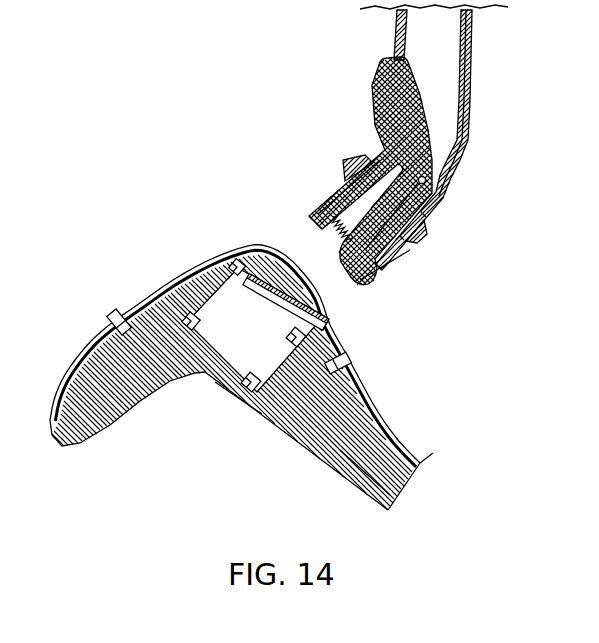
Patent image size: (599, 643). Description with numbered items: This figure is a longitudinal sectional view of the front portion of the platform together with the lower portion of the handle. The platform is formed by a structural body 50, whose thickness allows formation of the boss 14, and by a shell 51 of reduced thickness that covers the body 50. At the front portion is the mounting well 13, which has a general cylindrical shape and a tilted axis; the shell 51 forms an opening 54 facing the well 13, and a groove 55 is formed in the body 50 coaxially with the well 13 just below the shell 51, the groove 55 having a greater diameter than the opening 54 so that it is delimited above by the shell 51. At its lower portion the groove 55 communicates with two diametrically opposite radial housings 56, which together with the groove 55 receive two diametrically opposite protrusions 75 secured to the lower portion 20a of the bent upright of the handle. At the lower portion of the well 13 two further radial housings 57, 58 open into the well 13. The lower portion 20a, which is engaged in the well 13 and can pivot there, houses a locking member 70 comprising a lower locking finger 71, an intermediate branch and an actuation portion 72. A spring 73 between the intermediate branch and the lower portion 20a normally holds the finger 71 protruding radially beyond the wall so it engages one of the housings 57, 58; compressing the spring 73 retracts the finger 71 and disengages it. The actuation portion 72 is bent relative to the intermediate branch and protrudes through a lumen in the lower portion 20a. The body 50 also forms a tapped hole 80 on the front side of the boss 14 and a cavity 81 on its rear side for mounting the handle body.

The actuation portion 72 is at (374, 68).
The locking member 70 is at (437, 152).
The protrusions 75 is at (348, 158).
The spring 73 is at (337, 193).
The lower portion 20a is at (395, 252).
The lower locking finger 71 is at (372, 282).
The boss 14 is at (166, 260).
The radial housings 56 is at (239, 256).
The groove 55 is at (266, 263).
The tapped hole 80 is at (109, 307).
The opening 54 is at (325, 306).
The cavity 81 is at (351, 364).
The shell 51 is at (420, 447).
The radial housing 58 is at (193, 332).
The radial housing 57 is at (238, 367).
The mounting well 13 is at (228, 353).
The structural body 50 is at (377, 483).